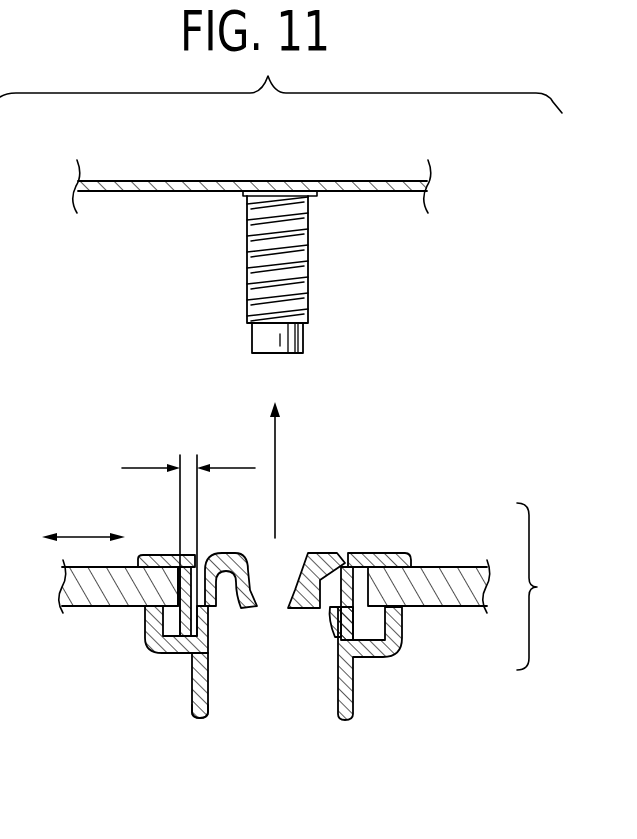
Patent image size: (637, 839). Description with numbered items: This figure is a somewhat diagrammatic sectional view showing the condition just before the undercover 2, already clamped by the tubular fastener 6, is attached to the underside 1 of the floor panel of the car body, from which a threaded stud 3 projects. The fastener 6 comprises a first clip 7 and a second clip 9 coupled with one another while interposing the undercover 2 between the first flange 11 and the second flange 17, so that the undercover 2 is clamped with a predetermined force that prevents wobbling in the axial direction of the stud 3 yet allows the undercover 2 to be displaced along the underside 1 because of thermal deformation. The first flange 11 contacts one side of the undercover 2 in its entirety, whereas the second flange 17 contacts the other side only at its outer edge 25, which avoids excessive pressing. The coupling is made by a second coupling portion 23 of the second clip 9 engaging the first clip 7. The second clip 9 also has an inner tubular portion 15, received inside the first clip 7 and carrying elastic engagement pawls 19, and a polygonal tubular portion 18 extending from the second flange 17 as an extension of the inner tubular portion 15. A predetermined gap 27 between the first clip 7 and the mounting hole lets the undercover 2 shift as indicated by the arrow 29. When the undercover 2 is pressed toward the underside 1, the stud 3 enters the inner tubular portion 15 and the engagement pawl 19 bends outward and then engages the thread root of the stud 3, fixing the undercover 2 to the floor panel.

The underside of the floor panel 1 is at (205, 181).
The stud 3 is at (308, 300).
The undercover 2 is at (62, 599).
The tubular fastener 6 is at (538, 586).
The first clip 7 is at (392, 545).
The second clip 9 is at (403, 660).
The first flange 11 is at (148, 556).
The inner tubular portion 15 is at (316, 554).
The second flange 17 is at (160, 650).
The polygonal tubular portion 18 is at (200, 718).
The elastic engagement pawl 19 is at (248, 609).
The second coupling portion 23 is at (208, 652).
The outer edge 25 is at (152, 600).
The gap 27 is at (187, 455).
The arrow 29 is at (77, 536).